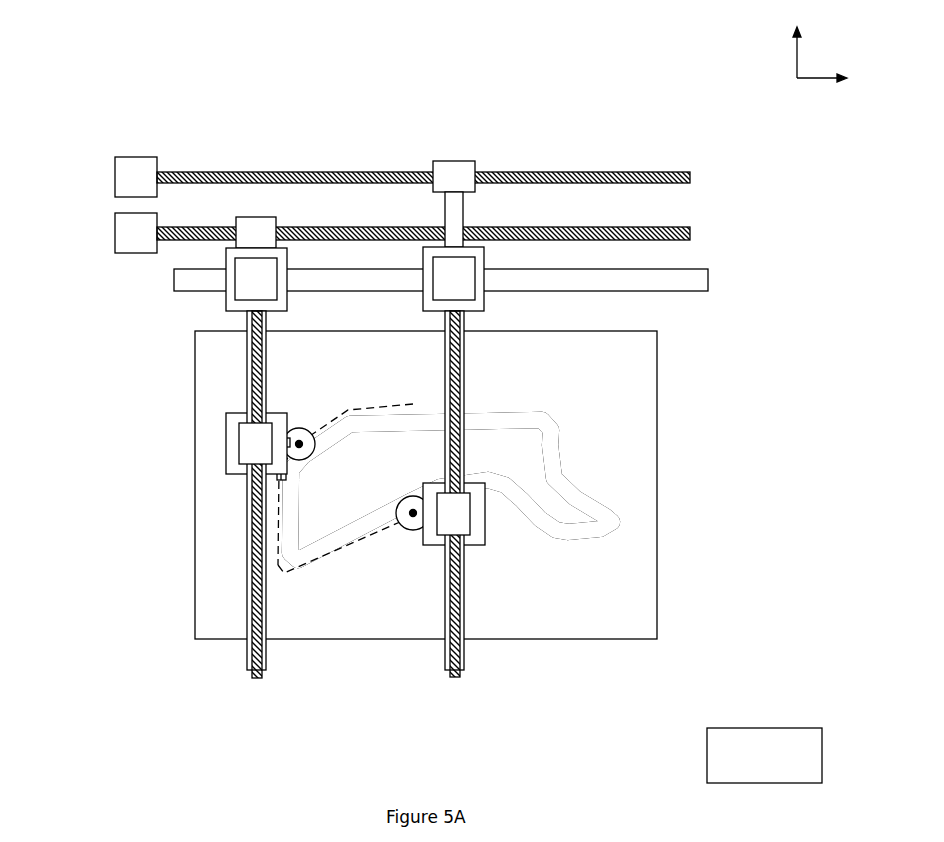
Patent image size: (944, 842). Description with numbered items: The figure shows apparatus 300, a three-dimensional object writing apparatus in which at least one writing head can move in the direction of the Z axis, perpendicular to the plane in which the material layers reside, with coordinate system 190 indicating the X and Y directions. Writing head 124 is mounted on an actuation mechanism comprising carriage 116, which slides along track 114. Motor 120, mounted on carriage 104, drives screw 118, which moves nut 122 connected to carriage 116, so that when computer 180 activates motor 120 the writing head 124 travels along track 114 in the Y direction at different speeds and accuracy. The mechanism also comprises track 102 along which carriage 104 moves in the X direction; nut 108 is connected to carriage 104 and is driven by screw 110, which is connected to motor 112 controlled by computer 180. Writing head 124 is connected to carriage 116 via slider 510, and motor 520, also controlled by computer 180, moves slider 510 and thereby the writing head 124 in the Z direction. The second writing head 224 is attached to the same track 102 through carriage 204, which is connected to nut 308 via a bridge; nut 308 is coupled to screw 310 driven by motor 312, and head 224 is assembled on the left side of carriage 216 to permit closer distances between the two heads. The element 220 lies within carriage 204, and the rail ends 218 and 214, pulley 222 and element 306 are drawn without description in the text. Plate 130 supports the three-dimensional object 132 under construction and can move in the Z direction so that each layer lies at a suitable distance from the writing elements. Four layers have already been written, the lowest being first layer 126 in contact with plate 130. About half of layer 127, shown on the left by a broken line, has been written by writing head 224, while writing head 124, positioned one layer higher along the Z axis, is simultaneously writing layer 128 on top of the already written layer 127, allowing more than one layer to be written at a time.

The apparatus 300 is at (166, 54).
The motor 312 is at (138, 173).
The screw 310 is at (235, 175).
The nut 108 is at (254, 223).
The carriage 104 is at (282, 258).
The nut 308 is at (452, 173).
The coupling 306 is at (452, 225).
The carriage 204 is at (478, 261).
The screw 110 is at (682, 227).
The track 102 is at (683, 280).
The coordinate system 190 is at (785, 75).
The motor 112 is at (130, 228).
The motor 120 is at (248, 282).
The bearing block 220 is at (452, 278).
The plate 130 is at (655, 368).
The carriage 116 is at (226, 414).
The nut 122 is at (250, 435).
The slider 510 is at (290, 440).
The layer 128 is at (345, 412).
The writing head 124 is at (308, 452).
The motor 520 is at (280, 468).
The 3D object 132 is at (628, 552).
The track 114 is at (247, 620).
The screw 118 is at (255, 680).
The layer 127 is at (320, 565).
The first layer 126 is at (370, 533).
The writing head 224 is at (413, 527).
The rail end 218 is at (455, 678).
The roller 222 is at (455, 515).
The carriage 216 is at (483, 530).
The vertical rail 214 is at (465, 657).
The computer 180 is at (720, 755).